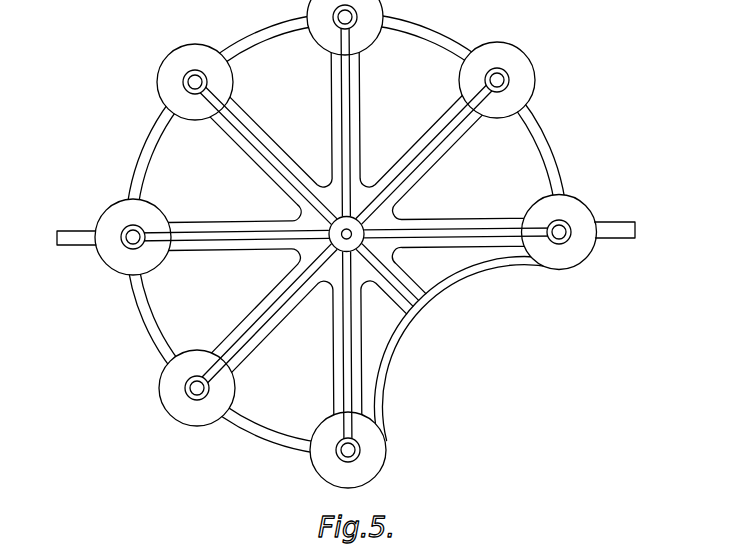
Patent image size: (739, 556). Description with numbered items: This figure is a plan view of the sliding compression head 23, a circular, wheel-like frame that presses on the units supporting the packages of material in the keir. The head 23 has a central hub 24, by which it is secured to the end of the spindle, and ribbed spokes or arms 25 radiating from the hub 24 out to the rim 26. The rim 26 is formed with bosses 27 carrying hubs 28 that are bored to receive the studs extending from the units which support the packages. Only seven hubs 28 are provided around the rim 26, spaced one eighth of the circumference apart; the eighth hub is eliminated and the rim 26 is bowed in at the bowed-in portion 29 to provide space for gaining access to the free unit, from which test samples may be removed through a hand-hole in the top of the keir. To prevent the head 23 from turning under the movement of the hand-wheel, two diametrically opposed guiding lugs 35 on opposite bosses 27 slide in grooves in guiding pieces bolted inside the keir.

The head 23 is at (346, 233).
The central hub 24 is at (362, 229).
The ribbed spokes or arms 25 is at (355, 89).
The rim 26 is at (552, 160).
The bosses 27 is at (580, 208).
The hubs 28 is at (128, 227).
The bowed-in portion of the rim 29 is at (425, 317).
The guiding lugs 35 is at (58, 232).